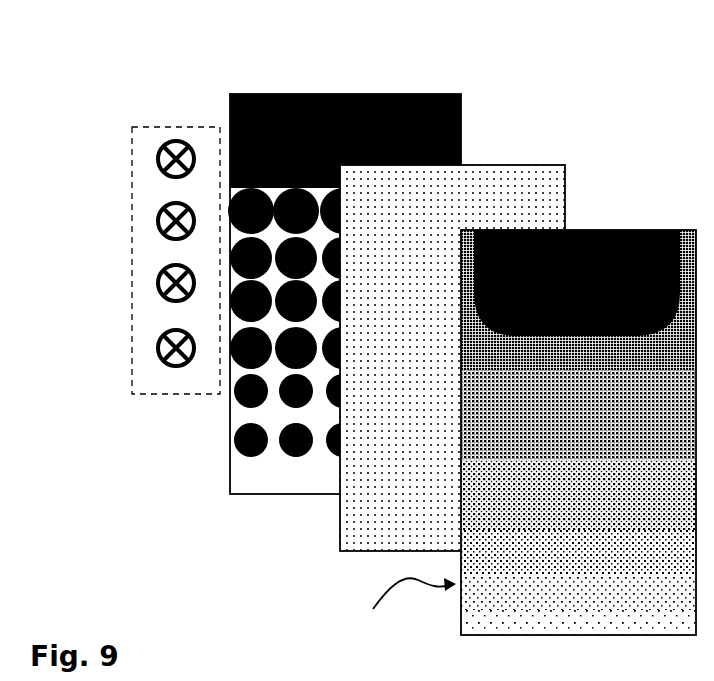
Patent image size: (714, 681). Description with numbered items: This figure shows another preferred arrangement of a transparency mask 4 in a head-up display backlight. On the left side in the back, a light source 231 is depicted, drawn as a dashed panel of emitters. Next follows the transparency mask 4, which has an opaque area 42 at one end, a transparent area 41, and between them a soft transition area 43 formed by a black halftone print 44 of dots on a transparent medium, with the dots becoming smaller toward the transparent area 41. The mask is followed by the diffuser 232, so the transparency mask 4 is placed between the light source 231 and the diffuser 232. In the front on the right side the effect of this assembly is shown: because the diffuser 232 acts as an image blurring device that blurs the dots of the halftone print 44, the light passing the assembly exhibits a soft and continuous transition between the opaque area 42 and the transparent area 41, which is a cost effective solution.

The transparency mask 4 is at (295, 291).
The transparent area 41 is at (237, 467).
The opaque area 42 is at (424, 86).
The soft transition area 43 is at (265, 358).
The halftone print 44 is at (220, 434).
The light source 231 is at (108, 388).
The diffuser 232 is at (482, 150).